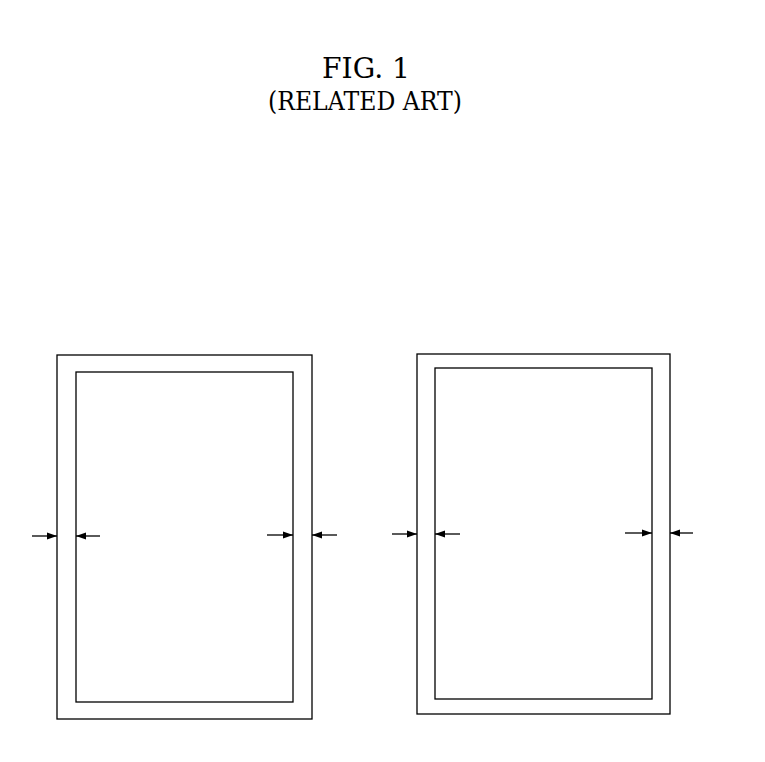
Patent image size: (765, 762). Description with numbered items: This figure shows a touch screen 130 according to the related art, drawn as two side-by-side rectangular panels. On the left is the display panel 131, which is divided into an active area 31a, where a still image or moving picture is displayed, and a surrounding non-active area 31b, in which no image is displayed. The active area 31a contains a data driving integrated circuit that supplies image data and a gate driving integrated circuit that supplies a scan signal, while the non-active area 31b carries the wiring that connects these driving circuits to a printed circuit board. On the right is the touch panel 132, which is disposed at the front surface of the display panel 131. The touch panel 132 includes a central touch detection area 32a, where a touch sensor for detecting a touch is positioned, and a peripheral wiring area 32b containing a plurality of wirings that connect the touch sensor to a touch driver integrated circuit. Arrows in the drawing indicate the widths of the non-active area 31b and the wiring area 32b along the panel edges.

The touch screen 130 is at (543, 298).
The display panel 131 is at (183, 355).
The touch panel 132 is at (541, 354).
The active area 31a is at (268, 426).
The non-active area 31b is at (302, 535).
The touch detection area 32a is at (627, 424).
The wiring area 32b is at (427, 537).